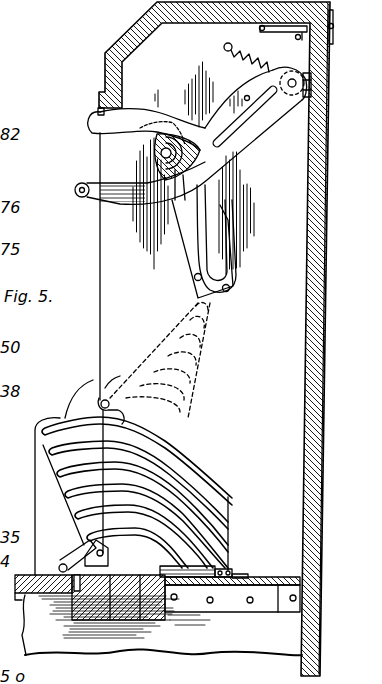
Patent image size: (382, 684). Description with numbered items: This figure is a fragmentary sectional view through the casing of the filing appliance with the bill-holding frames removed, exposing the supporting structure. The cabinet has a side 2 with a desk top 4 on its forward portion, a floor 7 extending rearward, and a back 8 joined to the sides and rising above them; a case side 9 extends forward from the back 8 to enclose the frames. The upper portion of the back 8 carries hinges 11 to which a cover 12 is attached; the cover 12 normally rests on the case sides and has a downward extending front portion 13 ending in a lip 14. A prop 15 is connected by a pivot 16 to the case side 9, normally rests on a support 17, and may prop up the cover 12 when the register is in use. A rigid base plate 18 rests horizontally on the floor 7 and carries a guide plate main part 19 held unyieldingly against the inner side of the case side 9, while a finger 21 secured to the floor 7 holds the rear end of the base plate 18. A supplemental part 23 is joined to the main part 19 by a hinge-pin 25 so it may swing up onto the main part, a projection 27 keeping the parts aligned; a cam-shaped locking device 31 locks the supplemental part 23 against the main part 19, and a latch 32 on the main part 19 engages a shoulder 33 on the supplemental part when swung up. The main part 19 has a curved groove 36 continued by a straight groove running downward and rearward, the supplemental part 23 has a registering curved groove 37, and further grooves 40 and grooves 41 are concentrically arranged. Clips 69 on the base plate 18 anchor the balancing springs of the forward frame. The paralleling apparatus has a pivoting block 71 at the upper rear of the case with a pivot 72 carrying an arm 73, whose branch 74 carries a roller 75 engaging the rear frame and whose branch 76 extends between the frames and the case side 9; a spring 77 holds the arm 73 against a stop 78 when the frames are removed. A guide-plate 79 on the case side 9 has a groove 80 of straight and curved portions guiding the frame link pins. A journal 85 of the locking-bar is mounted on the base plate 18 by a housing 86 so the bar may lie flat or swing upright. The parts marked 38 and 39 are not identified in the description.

The side 2 is at (166, 622).
The desk top 4 is at (32, 562).
The floor 7 is at (279, 615).
The back 8 is at (322, 346).
The case side 9 is at (110, 343).
The hinge 11 is at (334, 26).
The cover 12 is at (194, 14).
The front portion 13 is at (104, 72).
The lip 14 is at (99, 111).
The prop 15 is at (333, 34).
The pivot 16 is at (259, 29).
The support 17 is at (297, 38).
The base plate 18 is at (97, 650).
The guide plate main part 19 is at (210, 470).
The finger 21 is at (240, 576).
The supplemental guide plate part 23 is at (66, 418).
The hinge-pin 25 is at (157, 360).
The projection 27 is at (60, 494).
The locking device 31 is at (86, 550).
The latch 32 is at (178, 428).
The shoulder 33 is at (40, 440).
The curved groove 36 is at (132, 528).
The curved groove 37 is at (66, 533).
The leaf spring 38 is at (182, 402).
The pivot pin 39 is at (98, 398).
The groove 40 is at (128, 497).
The groove 41 is at (62, 468).
The clip 69 is at (170, 545).
The pivoting block 71 is at (304, 98).
The pivot 72 is at (297, 76).
The arm 73 is at (248, 132).
The branch 74 is at (88, 204).
The roller 75 is at (80, 183).
The branch 76 is at (92, 136).
The spring 77 is at (236, 62).
The stop 78 is at (245, 97).
The guide-plate 79 is at (213, 232).
The groove 80 is at (190, 240).
The journal 85 is at (203, 614).
The housing 86 is at (232, 558).